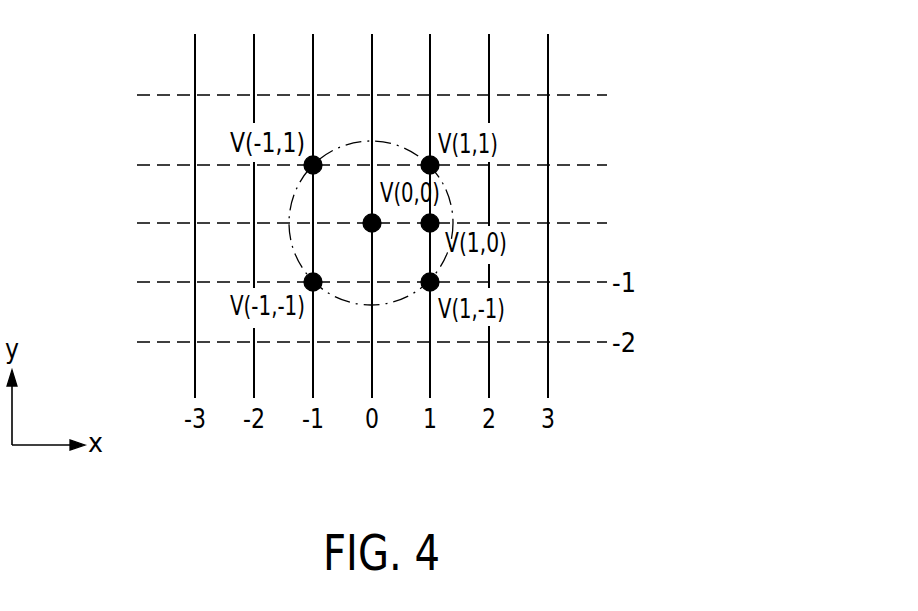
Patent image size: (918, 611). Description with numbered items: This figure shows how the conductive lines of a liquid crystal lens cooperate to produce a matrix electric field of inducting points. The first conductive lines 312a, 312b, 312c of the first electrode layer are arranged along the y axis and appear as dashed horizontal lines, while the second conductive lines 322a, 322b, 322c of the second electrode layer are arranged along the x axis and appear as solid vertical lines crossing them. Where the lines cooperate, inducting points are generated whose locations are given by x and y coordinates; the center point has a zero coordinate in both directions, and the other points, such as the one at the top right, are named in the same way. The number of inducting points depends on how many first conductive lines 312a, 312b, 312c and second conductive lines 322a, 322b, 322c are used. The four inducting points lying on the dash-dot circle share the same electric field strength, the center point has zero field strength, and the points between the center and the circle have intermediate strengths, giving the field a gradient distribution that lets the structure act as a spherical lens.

The first conductive line 312a is at (572, 95).
The first conductive line 312b is at (572, 165).
The first conductive line 312c is at (572, 223).
The second conductive line 322a is at (430, 362).
The second conductive line 322b is at (489, 362).
The second conductive line 322c is at (548, 362).